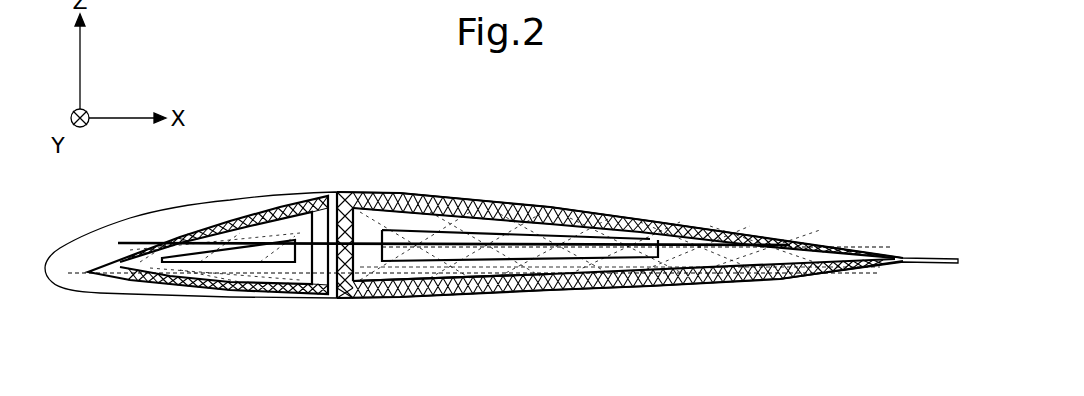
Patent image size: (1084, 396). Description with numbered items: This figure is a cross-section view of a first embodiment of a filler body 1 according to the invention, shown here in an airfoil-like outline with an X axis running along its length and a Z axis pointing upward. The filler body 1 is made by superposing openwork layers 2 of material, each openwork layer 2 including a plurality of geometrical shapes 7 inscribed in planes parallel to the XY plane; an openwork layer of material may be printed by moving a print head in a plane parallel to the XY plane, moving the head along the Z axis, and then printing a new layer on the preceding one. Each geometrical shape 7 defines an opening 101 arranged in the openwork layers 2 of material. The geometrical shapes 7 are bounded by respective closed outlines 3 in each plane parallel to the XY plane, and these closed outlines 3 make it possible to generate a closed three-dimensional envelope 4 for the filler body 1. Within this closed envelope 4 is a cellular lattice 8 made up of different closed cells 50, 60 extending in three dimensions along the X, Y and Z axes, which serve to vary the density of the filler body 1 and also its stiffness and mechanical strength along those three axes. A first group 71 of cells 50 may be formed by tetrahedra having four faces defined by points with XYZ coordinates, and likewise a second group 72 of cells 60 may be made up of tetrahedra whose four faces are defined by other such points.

The filler body 1 is at (832, 233).
The openwork layers 2 is at (672, 234).
The closed outlines 3 is at (788, 237).
The closed three-dimensional envelope 4 is at (643, 220).
The geometrical shapes 7 is at (523, 228).
The cellular lattice 8 is at (360, 192).
The cells 50 is at (340, 300).
The cells 60 is at (403, 278).
The first group 71 is at (360, 299).
The second group 72 is at (435, 299).
The opening 101 is at (597, 225).